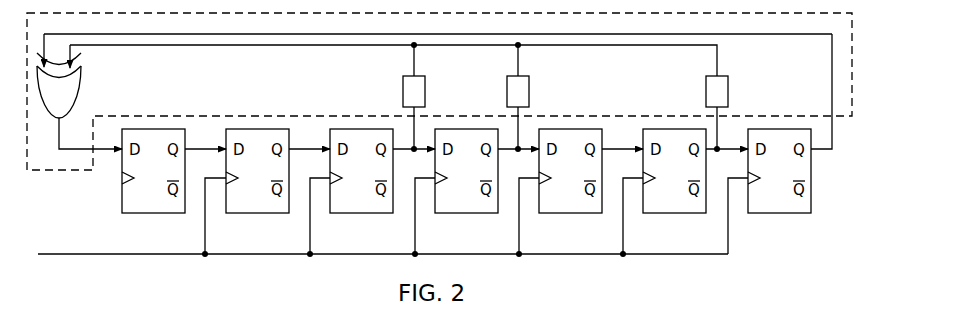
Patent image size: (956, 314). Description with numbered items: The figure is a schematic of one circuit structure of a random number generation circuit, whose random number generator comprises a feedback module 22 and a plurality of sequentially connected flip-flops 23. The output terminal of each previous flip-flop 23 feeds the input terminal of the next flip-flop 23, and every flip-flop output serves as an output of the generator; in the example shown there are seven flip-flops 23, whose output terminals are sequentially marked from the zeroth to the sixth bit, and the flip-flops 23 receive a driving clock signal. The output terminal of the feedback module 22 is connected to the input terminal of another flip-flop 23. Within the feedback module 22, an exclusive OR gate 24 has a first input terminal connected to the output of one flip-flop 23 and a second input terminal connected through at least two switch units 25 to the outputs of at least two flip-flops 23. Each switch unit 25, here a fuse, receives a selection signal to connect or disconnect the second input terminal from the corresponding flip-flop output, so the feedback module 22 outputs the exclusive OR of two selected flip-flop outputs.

The feedback module 22 is at (854, 78).
The flip-flop 23 is at (120, 201).
The exclusive OR gate 24 is at (81, 90).
The switch unit 25 is at (530, 88).